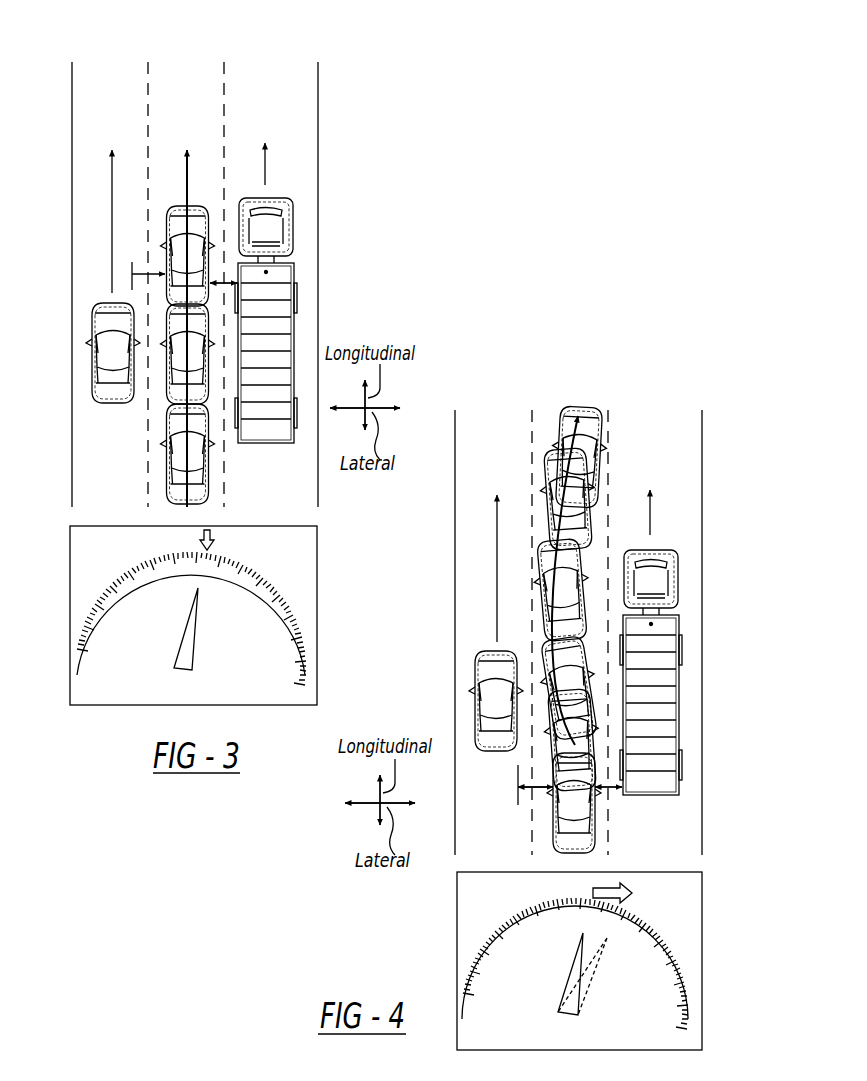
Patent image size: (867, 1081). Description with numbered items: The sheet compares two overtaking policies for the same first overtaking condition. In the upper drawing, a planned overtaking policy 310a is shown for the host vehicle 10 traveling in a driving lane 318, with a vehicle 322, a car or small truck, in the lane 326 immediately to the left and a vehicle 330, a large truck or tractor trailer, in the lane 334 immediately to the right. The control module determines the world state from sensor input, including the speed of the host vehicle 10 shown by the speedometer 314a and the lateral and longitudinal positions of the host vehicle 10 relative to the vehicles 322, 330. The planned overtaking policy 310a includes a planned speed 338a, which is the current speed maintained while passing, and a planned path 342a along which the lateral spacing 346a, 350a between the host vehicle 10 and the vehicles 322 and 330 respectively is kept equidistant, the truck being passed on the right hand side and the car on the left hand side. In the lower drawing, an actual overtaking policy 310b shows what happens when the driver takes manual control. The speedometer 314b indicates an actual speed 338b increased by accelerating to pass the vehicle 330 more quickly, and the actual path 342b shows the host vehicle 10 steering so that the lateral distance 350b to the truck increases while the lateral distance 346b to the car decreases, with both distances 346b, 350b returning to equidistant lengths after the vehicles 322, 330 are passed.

In FIG. 3, the host vehicle 10 is at (183, 468).
In FIG. 4, the host vehicle 10 is at (570, 822).
In FIG. 3, the planned overtaking policy 310a is at (328, 110).
In FIG. 4, the actual overtaking policy 310b is at (440, 524).
In FIG. 3, the speedometer 314a is at (90, 712).
In FIG. 4, the speedometer 314b is at (447, 908).
In FIG. 3, the driving lane 318 is at (222, 62).
In FIG. 4, the driving lane 318 is at (606, 408).
In FIG. 3, the vehicle 322 is at (110, 362).
In FIG. 4, the vehicle 322 is at (498, 700).
In FIG. 3, the lane 326 is at (146, 62).
In FIG. 4, the lane 326 is at (530, 408).
In FIG. 3, the vehicle 330 is at (270, 232).
In FIG. 4, the vehicle 330 is at (645, 677).
In FIG. 3, the lane 334 is at (300, 62).
In FIG. 4, the lane 334 is at (690, 408).
In FIG. 3, the planned speed 338a is at (212, 538).
In FIG. 4, the actual speed 338b is at (632, 893).
In FIG. 3, the planned path 342a is at (186, 185).
In FIG. 4, the actual path 342b is at (575, 490).
In FIG. 3, the lateral spacing 346a is at (132, 272).
In FIG. 4, the lateral distance 346b is at (516, 772).
In FIG. 3, the lateral spacing 350a is at (228, 280).
In FIG. 4, the lateral distance 350b is at (608, 790).